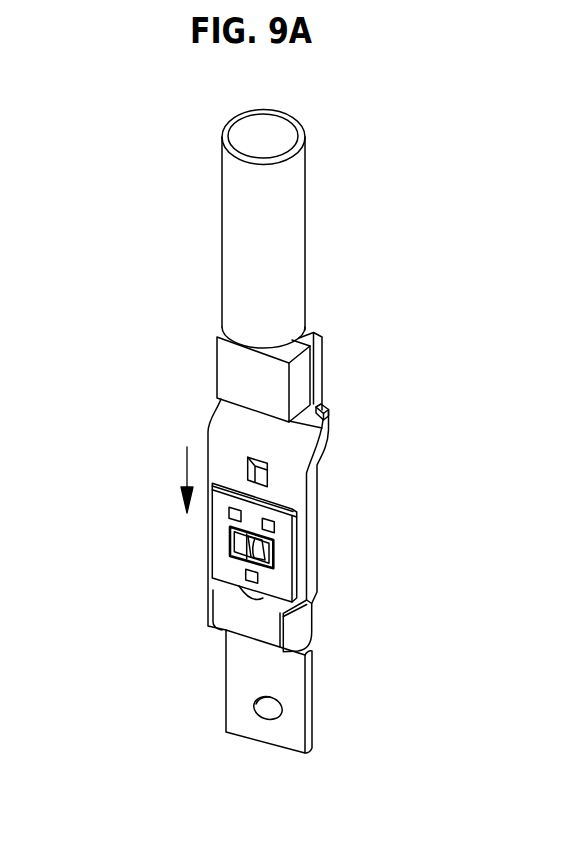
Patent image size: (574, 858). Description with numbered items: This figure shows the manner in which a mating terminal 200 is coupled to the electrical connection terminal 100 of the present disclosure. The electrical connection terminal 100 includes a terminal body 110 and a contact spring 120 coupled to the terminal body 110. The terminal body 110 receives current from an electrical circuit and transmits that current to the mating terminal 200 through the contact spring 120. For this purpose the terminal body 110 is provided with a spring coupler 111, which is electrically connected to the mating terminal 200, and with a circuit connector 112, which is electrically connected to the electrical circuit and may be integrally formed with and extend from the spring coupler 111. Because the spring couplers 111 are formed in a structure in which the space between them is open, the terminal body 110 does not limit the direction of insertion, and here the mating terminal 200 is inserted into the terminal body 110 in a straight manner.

The electrical connection terminal 100 is at (95, 532).
The terminal body 110 is at (232, 610).
The spring coupler 111 is at (227, 487).
The circuit connector 112 is at (243, 698).
The contact spring 120 is at (222, 542).
The mating terminal 200 is at (290, 490).